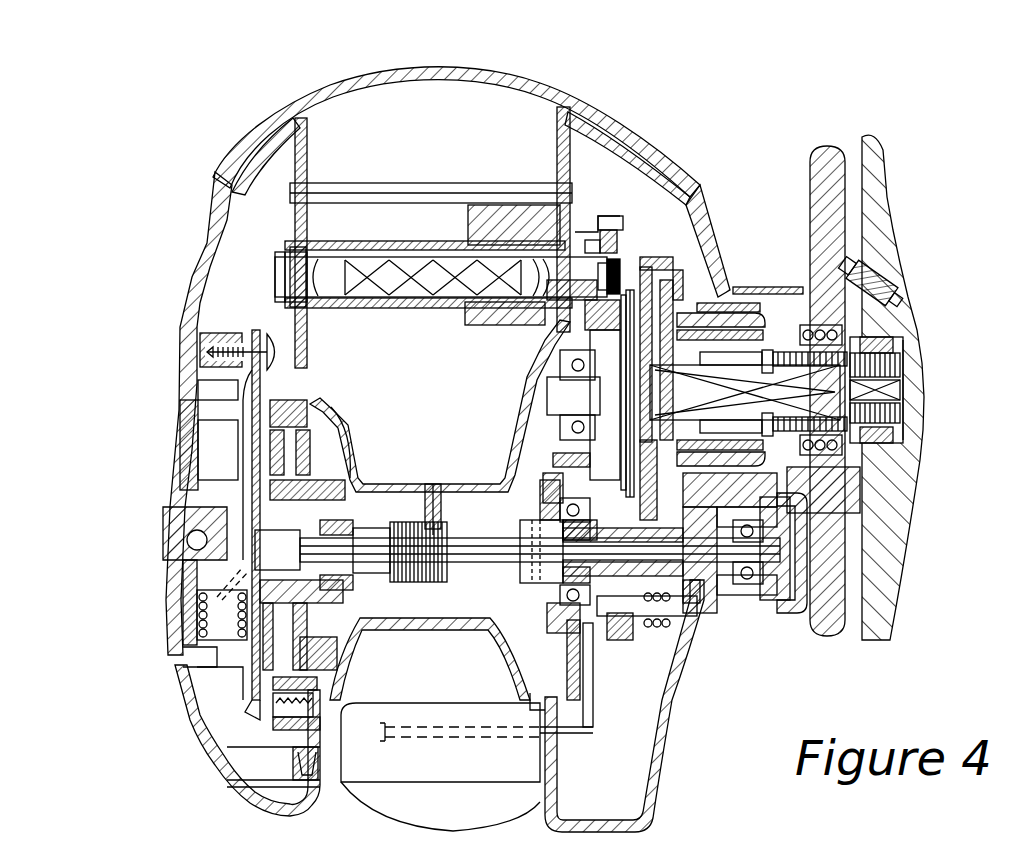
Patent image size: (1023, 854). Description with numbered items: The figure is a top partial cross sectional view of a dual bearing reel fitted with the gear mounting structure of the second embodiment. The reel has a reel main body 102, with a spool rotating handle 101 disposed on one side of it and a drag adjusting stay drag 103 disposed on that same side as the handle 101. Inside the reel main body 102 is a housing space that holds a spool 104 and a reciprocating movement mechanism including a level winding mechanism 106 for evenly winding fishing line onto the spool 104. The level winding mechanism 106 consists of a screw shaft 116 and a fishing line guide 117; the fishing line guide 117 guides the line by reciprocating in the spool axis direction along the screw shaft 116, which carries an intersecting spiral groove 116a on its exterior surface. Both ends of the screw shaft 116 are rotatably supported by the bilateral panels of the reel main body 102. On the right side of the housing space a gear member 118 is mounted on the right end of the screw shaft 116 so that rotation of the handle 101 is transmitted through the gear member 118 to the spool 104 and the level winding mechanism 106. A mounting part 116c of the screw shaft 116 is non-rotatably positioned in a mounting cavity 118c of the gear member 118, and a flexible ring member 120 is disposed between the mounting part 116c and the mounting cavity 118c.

The spool rotating handle 101 is at (912, 142).
The reel main body 102 is at (262, 108).
The drag adjusting stay drag 103 is at (830, 160).
The spool 104 is at (433, 465).
The level winding mechanism 106 is at (422, 225).
The screw shaft 116 is at (408, 293).
The spiral groove 116a is at (370, 308).
The mounting part 116c is at (628, 283).
The fishing line guide 117 is at (504, 212).
The gear member 118 is at (608, 232).
The mounting cavity 118c is at (617, 216).
The flexible ring member 120 is at (631, 288).